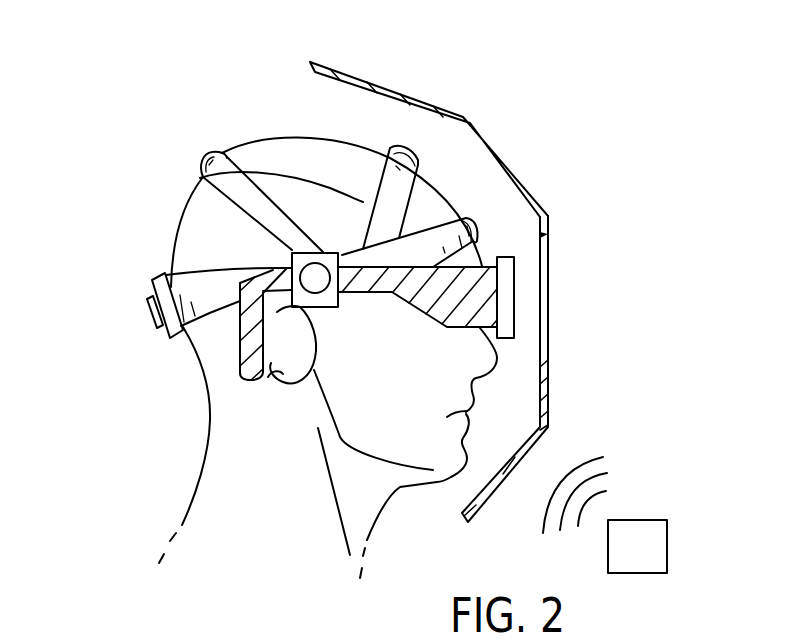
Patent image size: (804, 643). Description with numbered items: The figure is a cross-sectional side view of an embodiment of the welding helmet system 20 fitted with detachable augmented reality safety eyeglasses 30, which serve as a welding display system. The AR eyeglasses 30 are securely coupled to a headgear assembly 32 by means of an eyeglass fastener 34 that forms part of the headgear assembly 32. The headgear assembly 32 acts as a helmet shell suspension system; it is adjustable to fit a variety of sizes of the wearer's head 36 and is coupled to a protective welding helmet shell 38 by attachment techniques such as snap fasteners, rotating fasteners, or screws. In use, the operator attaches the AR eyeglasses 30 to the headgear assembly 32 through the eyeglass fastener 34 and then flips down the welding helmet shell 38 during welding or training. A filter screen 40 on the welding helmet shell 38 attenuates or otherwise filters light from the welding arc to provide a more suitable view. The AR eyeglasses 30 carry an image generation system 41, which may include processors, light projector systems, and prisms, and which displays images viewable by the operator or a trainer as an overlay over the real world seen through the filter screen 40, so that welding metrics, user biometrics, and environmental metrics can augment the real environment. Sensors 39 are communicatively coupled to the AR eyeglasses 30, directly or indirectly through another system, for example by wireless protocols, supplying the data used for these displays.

The helmet system 20 is at (147, 135).
The augmented reality safety eyeglasses 30 is at (458, 220).
The headgear assembly 32 is at (200, 273).
The eyeglass fastener 34 is at (325, 307).
The head 36 is at (223, 380).
The welding helmet shell 38 is at (352, 74).
The sensors 39 is at (637, 520).
The filter screen 40 is at (553, 313).
The image generation system 41 is at (515, 293).